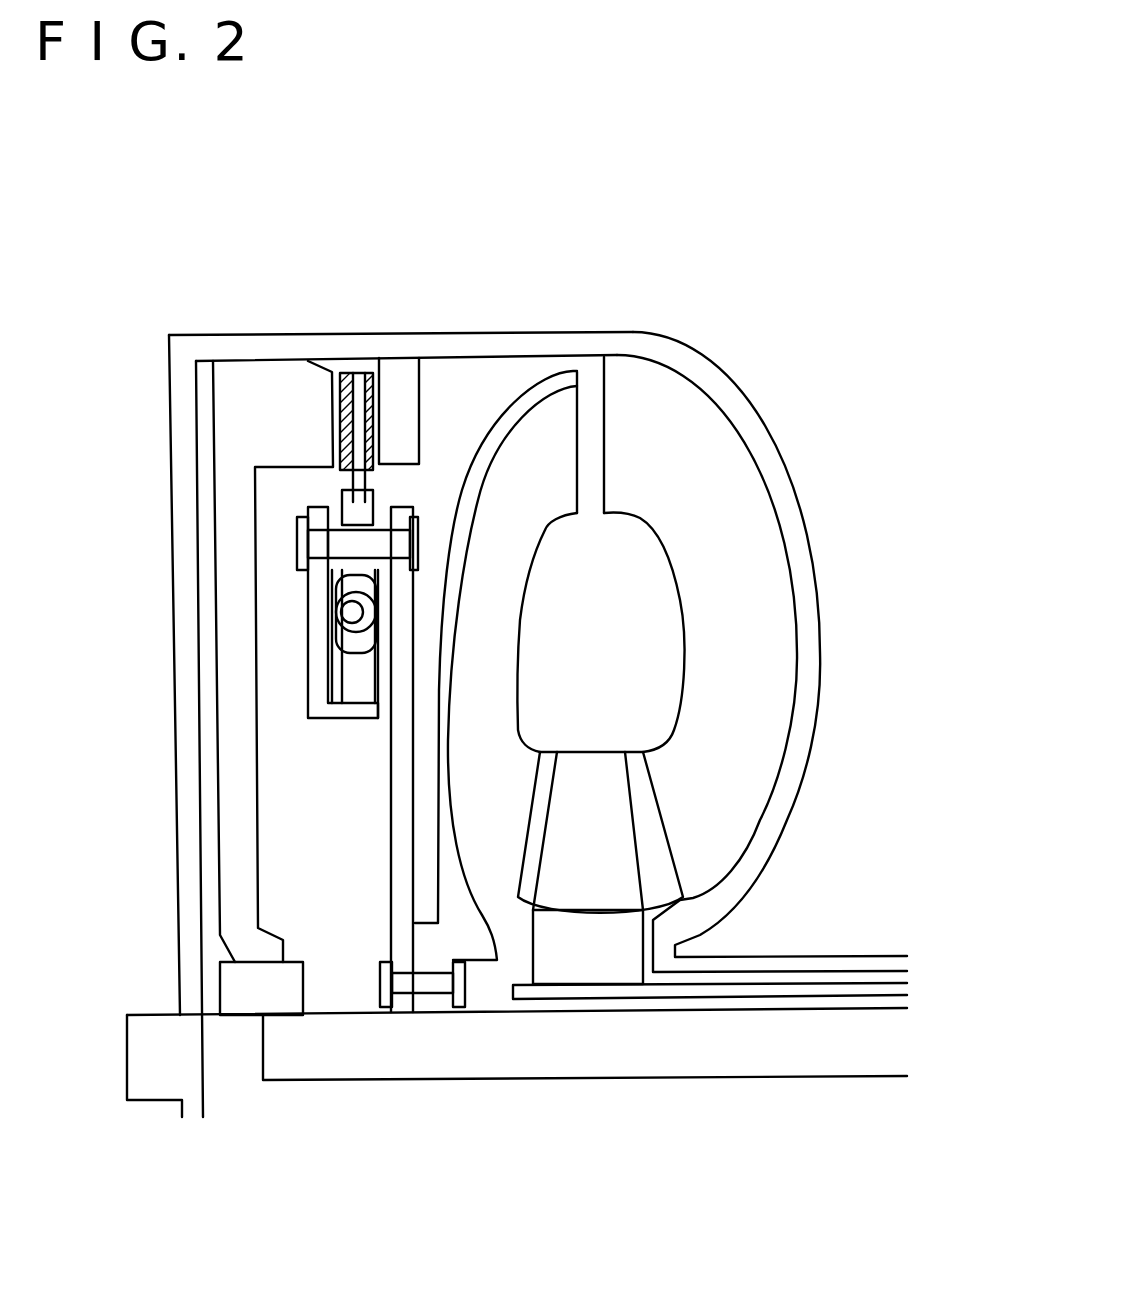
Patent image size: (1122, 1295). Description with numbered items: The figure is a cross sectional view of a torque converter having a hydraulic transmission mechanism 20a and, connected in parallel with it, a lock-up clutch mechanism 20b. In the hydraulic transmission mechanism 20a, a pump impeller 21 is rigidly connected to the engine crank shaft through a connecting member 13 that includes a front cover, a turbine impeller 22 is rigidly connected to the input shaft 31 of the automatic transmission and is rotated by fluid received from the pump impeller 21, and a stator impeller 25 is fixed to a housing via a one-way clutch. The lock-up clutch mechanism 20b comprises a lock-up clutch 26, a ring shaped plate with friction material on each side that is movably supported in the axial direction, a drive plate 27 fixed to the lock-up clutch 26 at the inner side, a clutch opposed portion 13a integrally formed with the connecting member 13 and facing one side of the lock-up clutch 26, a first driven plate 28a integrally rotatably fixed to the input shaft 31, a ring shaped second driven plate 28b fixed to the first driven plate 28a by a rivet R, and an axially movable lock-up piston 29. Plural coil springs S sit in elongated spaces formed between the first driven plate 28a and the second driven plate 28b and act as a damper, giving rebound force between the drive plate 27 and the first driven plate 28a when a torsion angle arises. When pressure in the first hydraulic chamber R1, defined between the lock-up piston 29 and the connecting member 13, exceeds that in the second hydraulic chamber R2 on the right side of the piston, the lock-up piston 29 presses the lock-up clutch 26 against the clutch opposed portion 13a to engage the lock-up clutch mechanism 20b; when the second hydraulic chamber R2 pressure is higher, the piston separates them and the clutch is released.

The connecting member 13 is at (172, 497).
The clutch opposed portion 13a is at (423, 388).
The hydraulic transmission mechanism 20a is at (683, 349).
The lock-up clutch mechanism 20b is at (322, 362).
The pump impeller 21 is at (705, 418).
The turbine impeller 22 is at (577, 405).
The stator impeller 25 is at (585, 750).
The lock-up clutch 26 is at (378, 370).
The drive plate 27 is at (340, 500).
The first driven plate 28a is at (391, 848).
The second driven plate 28b is at (307, 697).
The lock-up piston 29 is at (212, 432).
The input shaft 31 is at (762, 1082).
The rivet R is at (380, 500).
The coil spring S is at (345, 615).
The first hydraulic chamber R1 is at (212, 797).
The second hydraulic chamber R2 is at (477, 385).